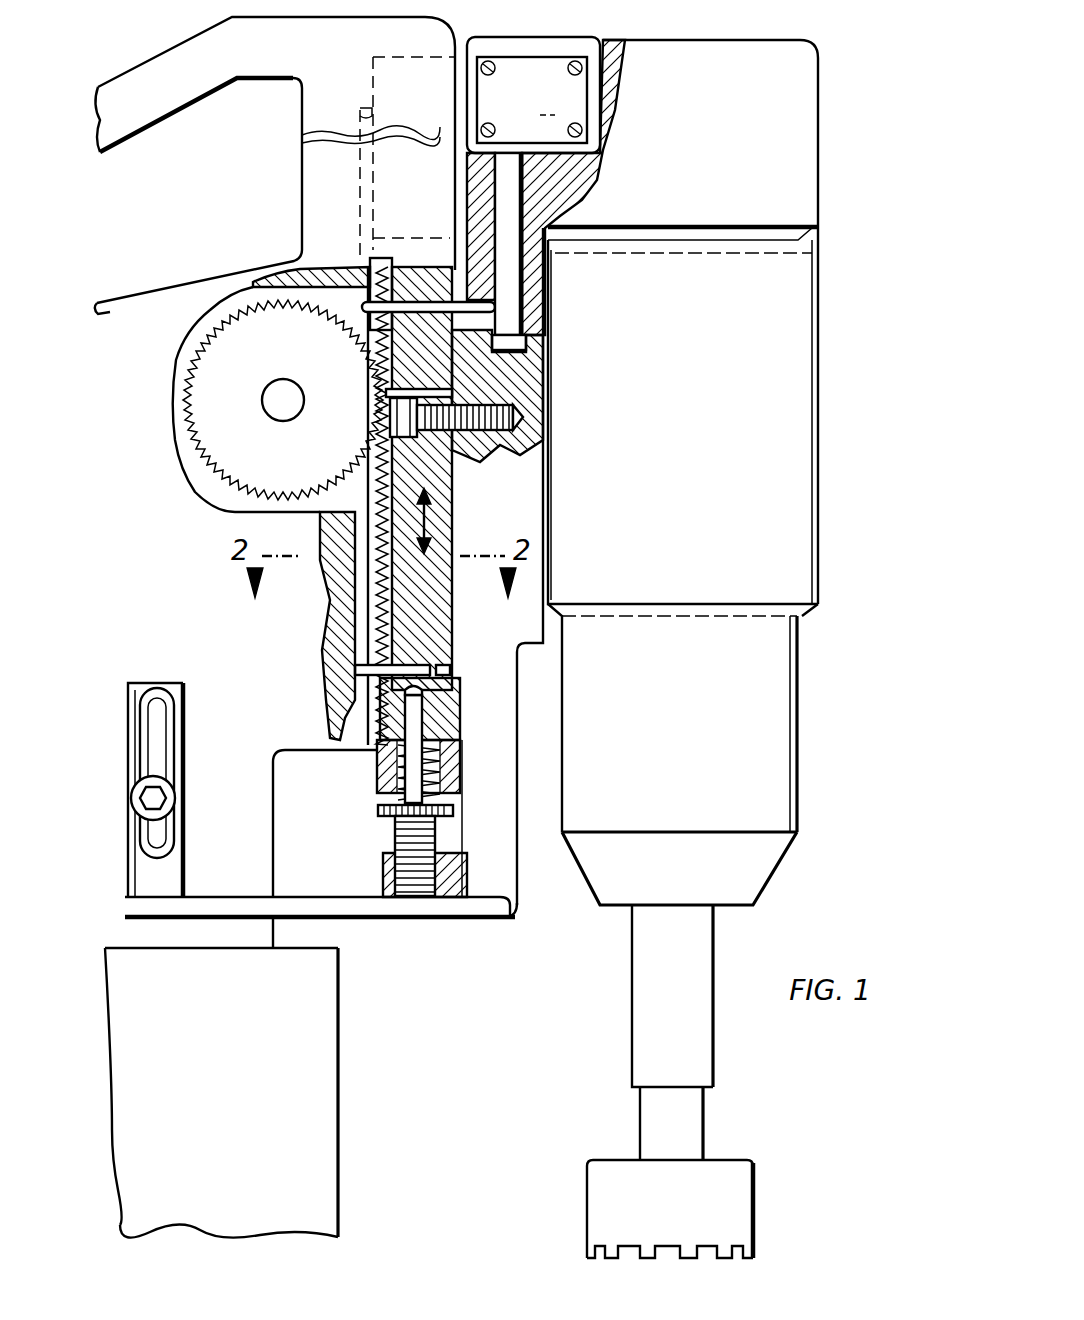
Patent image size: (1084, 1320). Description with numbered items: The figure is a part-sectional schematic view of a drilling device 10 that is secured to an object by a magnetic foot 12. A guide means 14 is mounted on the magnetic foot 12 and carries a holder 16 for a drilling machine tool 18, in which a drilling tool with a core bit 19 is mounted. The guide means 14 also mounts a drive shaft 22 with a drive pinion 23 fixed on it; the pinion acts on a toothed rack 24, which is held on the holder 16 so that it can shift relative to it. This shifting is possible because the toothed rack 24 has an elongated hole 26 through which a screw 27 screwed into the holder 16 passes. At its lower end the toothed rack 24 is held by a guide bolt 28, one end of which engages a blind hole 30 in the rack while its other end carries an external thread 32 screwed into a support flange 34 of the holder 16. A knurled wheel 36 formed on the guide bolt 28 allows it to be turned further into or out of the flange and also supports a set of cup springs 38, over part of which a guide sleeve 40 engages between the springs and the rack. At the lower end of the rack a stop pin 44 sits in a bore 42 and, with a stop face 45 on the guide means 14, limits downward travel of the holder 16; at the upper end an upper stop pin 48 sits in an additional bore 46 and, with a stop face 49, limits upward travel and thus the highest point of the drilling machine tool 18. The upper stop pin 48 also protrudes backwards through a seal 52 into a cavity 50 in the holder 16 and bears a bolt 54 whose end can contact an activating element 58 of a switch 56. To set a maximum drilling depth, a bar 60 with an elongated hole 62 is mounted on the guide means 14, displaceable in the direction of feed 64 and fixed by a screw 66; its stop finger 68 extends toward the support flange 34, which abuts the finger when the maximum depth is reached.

The drilling device 10 is at (838, 387).
The magnetic foot 12 is at (328, 997).
The guide means 14 is at (282, 738).
The holder 16 is at (803, 137).
The drilling machine tool 18 is at (803, 517).
The core bit 19 is at (738, 1170).
The drive shaft 22 is at (292, 412).
The drive pinion 23 is at (198, 342).
The toothed rack 24 is at (333, 583).
The elongated hole 26 is at (378, 398).
The screw 27 is at (494, 446).
The guide bolt 28 is at (422, 723).
The blind hole 30 is at (422, 690).
The external thread 32 is at (397, 862).
The support flange 34 is at (480, 898).
The knurled wheel 36 is at (453, 813).
The set of cup springs 38 is at (378, 810).
The guide sleeve 40 is at (460, 767).
The bore 42 is at (452, 665).
The stop pin 44 is at (347, 630).
The stop face 45 is at (360, 690).
The additional bore 46 is at (412, 303).
The upper stop pin 48 is at (390, 307).
The stop face 49 is at (385, 110).
The cavity 50 is at (448, 399).
The seal 52 is at (472, 277).
The bolt 54 is at (512, 272).
The switch 56 is at (547, 62).
The activating element 58 is at (503, 143).
The bar 60 is at (183, 870).
The elongated hole 62 is at (153, 723).
The direction of feed 64 is at (431, 522).
The screw 66 is at (183, 797).
The stop finger 68 is at (513, 917).